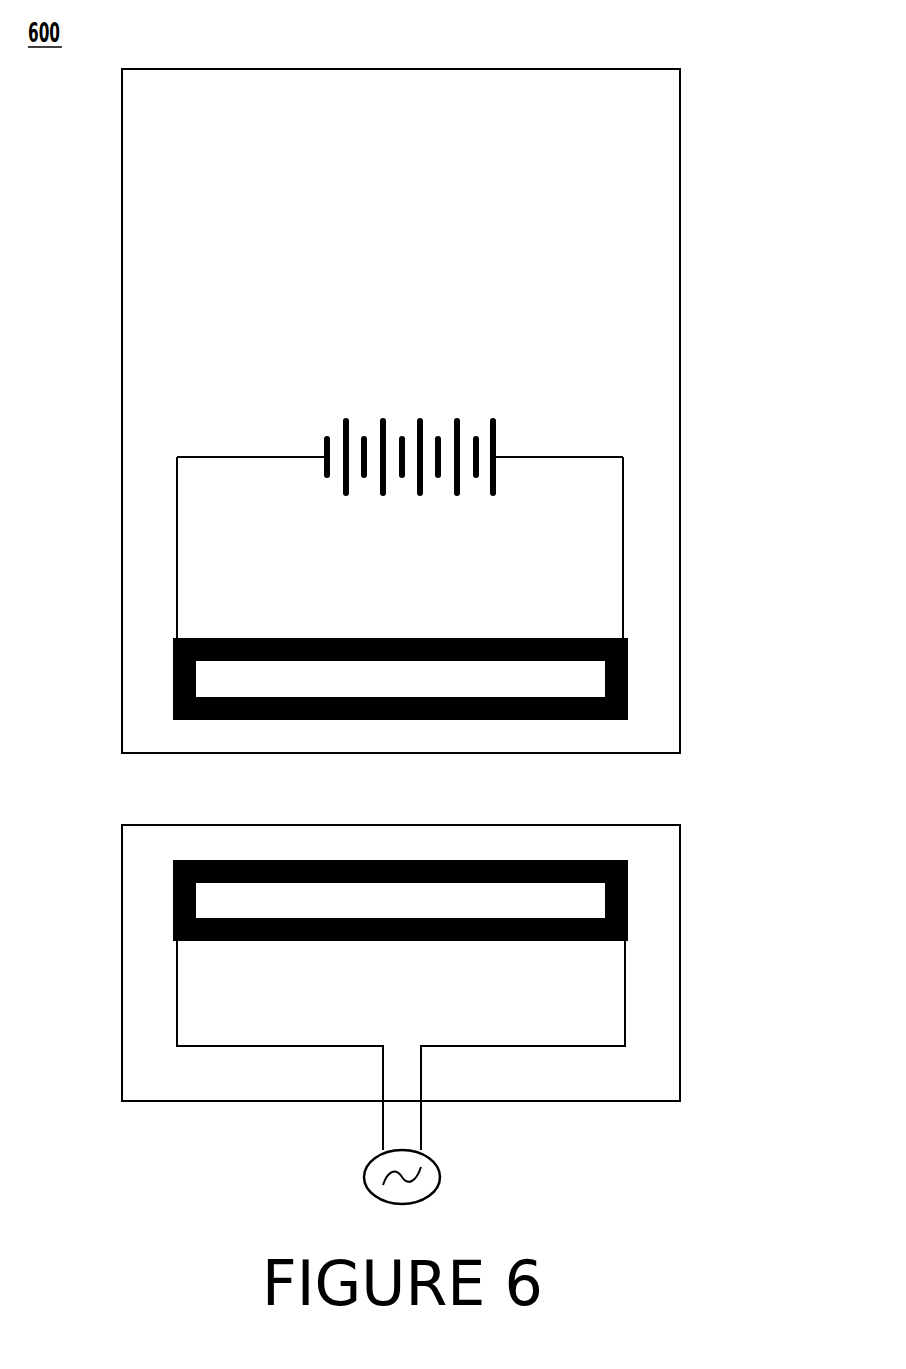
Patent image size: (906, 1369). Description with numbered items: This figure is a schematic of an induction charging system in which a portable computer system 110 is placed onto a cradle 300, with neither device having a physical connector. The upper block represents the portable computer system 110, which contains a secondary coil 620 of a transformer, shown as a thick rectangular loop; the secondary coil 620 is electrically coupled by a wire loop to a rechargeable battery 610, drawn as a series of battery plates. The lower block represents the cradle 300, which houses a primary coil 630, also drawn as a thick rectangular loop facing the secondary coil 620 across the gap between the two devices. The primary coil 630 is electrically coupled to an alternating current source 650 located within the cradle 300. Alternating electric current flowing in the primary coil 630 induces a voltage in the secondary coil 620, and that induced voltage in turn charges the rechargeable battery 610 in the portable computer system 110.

The portable computer system 110 is at (680, 120).
The rechargeable battery 610 is at (493, 400).
The secondary coil 620 is at (628, 665).
The cradle 300 is at (680, 1055).
The primary coil 630 is at (628, 893).
The alternating current source 650 is at (440, 1171).